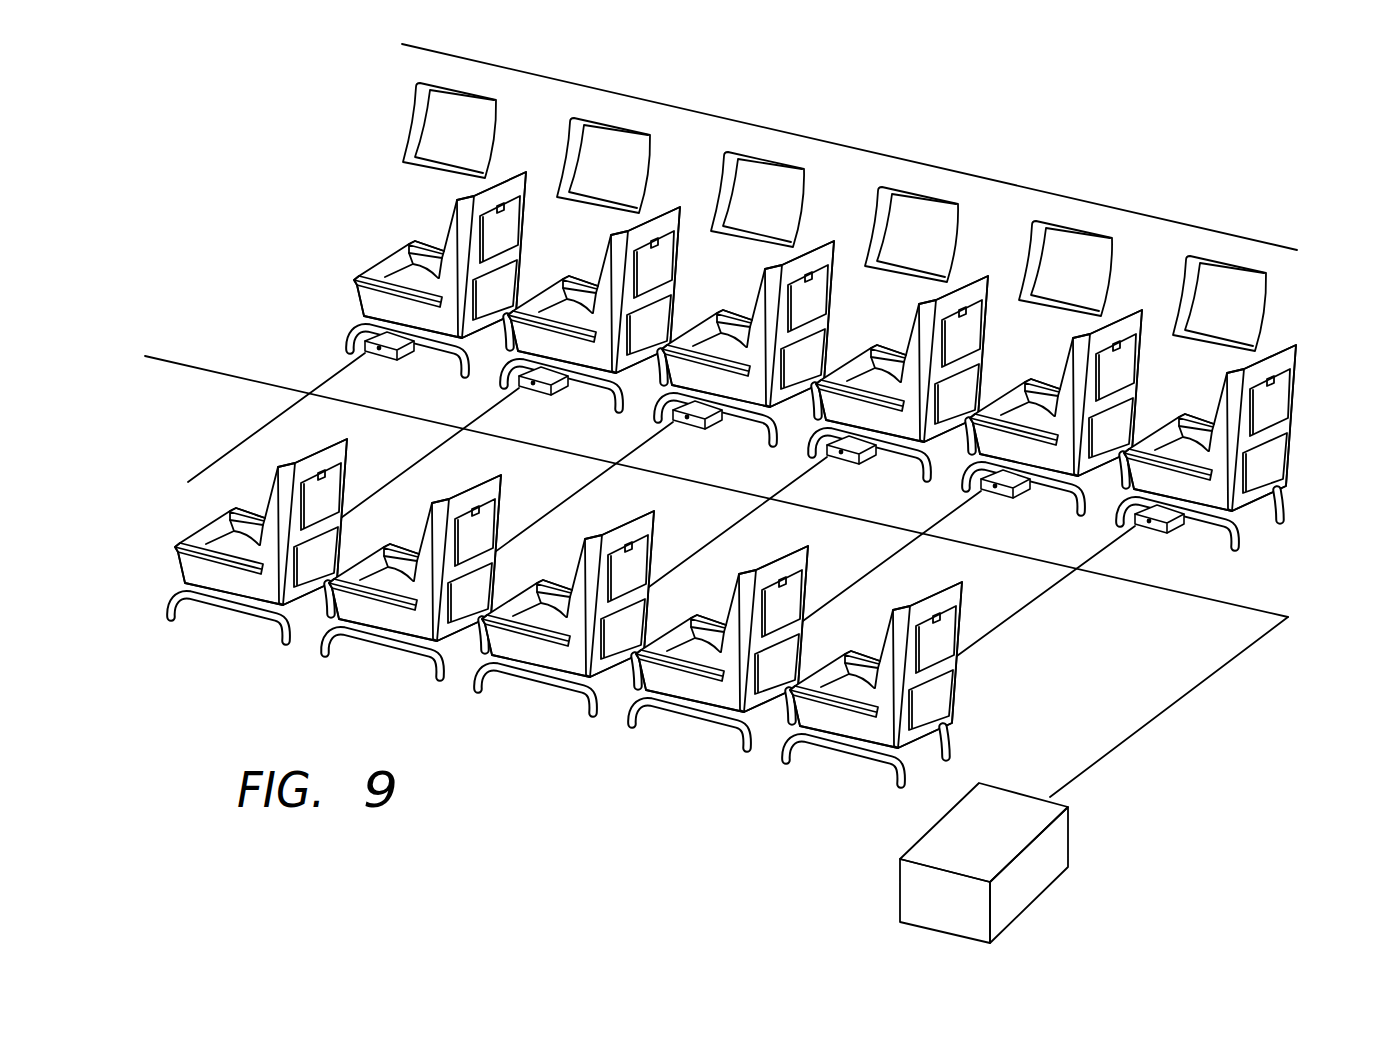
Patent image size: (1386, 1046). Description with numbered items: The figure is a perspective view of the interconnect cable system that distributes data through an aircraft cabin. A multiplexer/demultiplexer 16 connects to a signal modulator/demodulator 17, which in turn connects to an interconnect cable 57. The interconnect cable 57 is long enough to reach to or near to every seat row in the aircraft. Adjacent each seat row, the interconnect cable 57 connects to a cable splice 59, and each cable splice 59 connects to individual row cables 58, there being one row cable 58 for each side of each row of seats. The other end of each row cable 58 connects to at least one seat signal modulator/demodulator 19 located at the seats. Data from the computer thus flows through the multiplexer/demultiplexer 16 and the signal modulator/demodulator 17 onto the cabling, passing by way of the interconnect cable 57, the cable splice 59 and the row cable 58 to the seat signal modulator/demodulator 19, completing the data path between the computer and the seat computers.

The multiplexer/demultiplexer 16 is at (947, 843).
The signal modulator/demodulator 17 is at (1052, 845).
The seat signal modulator/demodulator 19 is at (365, 350).
The interconnect cable 57 is at (1260, 611).
The row cable 58 is at (947, 643).
The cable splice 59 is at (1060, 588).